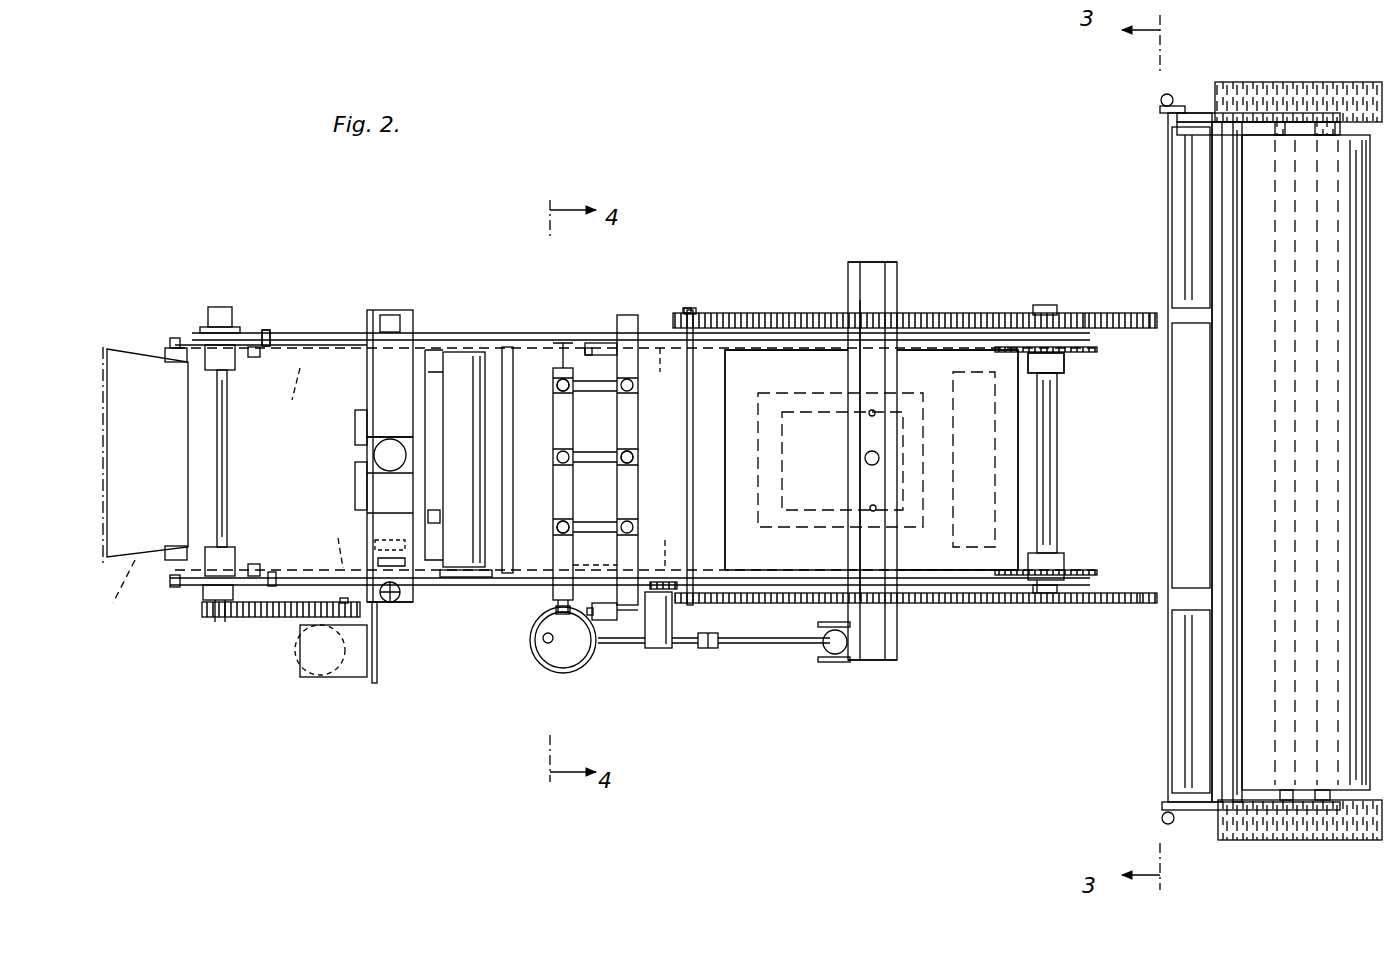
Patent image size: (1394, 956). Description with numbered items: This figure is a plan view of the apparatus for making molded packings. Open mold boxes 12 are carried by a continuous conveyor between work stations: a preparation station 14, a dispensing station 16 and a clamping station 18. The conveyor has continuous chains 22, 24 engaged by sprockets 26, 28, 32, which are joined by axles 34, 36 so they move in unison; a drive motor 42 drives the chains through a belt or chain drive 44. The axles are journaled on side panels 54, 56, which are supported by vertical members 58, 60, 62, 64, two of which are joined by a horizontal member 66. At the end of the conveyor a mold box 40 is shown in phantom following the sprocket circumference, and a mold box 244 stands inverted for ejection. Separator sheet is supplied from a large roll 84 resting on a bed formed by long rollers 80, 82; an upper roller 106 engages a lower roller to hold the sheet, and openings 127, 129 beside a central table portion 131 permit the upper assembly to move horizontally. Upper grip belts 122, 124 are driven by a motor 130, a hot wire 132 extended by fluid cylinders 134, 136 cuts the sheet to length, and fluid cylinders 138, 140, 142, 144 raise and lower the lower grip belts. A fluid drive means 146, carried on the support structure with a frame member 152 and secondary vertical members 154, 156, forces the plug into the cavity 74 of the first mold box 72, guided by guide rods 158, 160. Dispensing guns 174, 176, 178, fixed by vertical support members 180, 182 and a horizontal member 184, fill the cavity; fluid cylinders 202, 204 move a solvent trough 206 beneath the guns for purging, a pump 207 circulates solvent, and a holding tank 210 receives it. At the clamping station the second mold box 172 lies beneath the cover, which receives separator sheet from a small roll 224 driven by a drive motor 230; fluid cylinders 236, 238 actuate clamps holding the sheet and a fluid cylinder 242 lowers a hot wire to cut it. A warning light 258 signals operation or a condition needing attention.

The mold boxes 12 is at (720, 400).
The preparation station 14 is at (890, 255).
The dispensing station 16 is at (645, 292).
The clamping station 18 is at (402, 300).
The continuous chain 22 is at (635, 539).
The continuous chain 24 is at (635, 386).
The sprocket 26 is at (1085, 578).
The sprocket 28 is at (1082, 355).
The sprocket 32 is at (168, 345).
The axle 34 is at (1047, 482).
The axle 36 is at (228, 520).
The mold box in phantom 40 is at (119, 598).
The drive motor 42 is at (302, 660).
The belt or chain drive 44 is at (255, 620).
The side panel 54 is at (482, 585).
The side panel 56 is at (507, 340).
The vertical member 58 is at (388, 612).
The vertical member 60 is at (367, 320).
The vertical member 62 is at (812, 620).
The vertical member 64 is at (850, 300).
The horizontal member 66 is at (375, 380).
The first mold box 72 is at (945, 382).
The mold cavity 74 is at (802, 393).
The long roller 80 is at (1285, 802).
The long roller 82 is at (1322, 800).
The large roll 84 is at (1360, 800).
The upper roller 106 is at (1215, 415).
The upper grip belt 122 is at (1090, 608).
The upper grip belt 124 is at (1085, 312).
The opening 127 is at (1175, 600).
The opening / axle 129 is at (687, 468).
The motor 130 is at (660, 650).
The central table portion 131 is at (1208, 445).
The hot wire 132 is at (1177, 222).
The fluid cylinder 134 is at (1160, 820).
The fluid cylinder 136 is at (1160, 98).
The fluid cylinder 138 is at (755, 645).
The fluid cylinder 140 is at (1040, 600).
The fluid cylinder 142 is at (757, 313).
The fluid cylinder 144 is at (1010, 320).
The fluid drive means 146 is at (865, 460).
The frame section 152 is at (895, 540).
The secondary vertical member 154 is at (870, 665).
The secondary vertical member 156 is at (866, 262).
The guide rod 158 is at (870, 506).
The guide rod 160 is at (869, 416).
The second mold box 172 is at (318, 487).
The dispensing gun 174 is at (557, 528).
The dispensing gun 176 is at (557, 458).
The dispensing gun 178 is at (557, 386).
The vertical support member 180 is at (604, 622).
The vertical support member 182 is at (625, 316).
The horizontal member 184 is at (640, 416).
The fluid cylinder 202 is at (604, 343).
The fluid cylinder 204 is at (578, 655).
The solvent trough 206 is at (585, 568).
The pump 207 is at (826, 652).
The holding tank 210 is at (550, 666).
The small roll 224 is at (475, 428).
The drive motor 230 is at (434, 355).
The fluid cylinder 236 is at (252, 564).
The fluid cylinder 238 is at (254, 358).
The fluid cylinder 242 is at (272, 572).
The mold box 244 is at (268, 330).
The warning light 258 is at (400, 600).